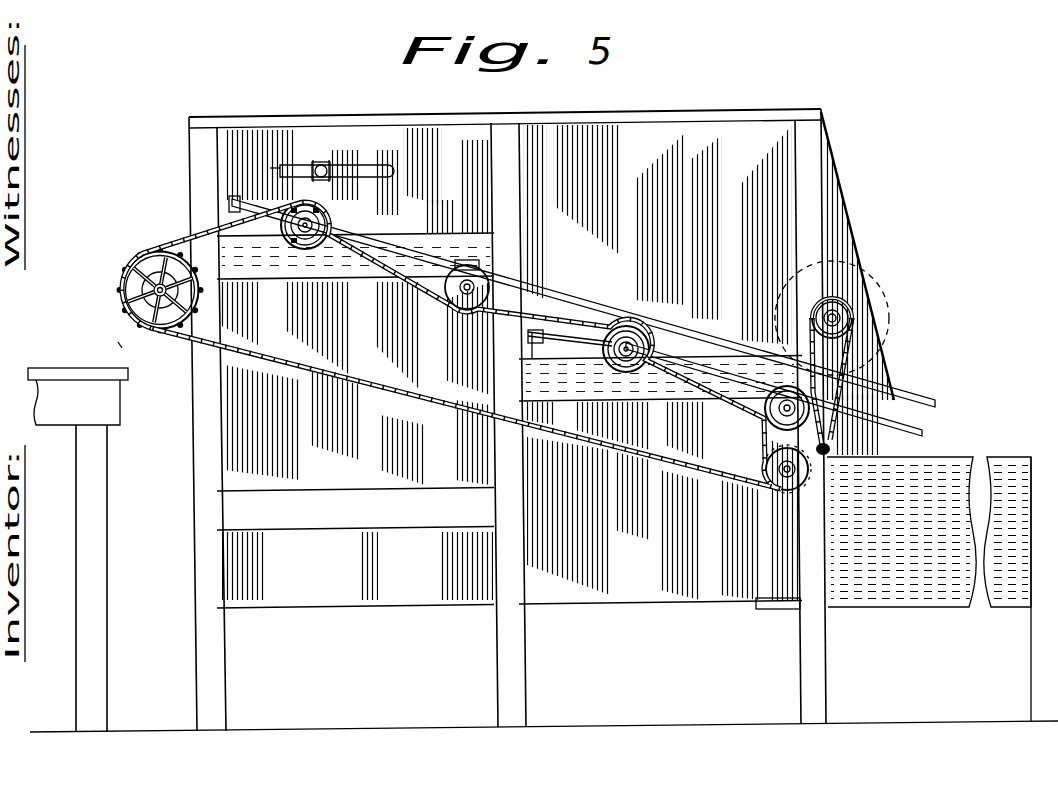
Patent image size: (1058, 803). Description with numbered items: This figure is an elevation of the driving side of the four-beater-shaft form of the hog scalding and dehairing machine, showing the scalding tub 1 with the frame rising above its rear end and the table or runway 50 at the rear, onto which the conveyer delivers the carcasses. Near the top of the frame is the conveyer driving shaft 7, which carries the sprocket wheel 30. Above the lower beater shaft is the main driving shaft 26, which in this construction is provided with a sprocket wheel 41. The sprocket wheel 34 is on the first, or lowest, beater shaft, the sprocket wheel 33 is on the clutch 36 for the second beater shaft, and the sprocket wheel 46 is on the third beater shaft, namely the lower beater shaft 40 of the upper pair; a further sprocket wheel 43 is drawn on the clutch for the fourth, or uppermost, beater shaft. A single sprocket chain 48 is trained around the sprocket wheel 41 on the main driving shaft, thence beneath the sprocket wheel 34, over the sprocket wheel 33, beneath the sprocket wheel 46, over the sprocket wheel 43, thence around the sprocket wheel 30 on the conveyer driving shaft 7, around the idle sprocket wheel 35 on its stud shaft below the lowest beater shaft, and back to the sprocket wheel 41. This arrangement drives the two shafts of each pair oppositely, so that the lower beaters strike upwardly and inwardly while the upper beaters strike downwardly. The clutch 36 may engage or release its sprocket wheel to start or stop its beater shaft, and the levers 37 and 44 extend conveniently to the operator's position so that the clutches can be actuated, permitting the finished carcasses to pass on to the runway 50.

The scalding tub 1 is at (953, 465).
The driving shaft 7 is at (118, 332).
The main driving shaft 26 is at (838, 318).
The sprocket wheel 30 is at (131, 265).
The sprocket wheel 33 is at (630, 327).
The sprocket wheel 34 is at (825, 455).
The idle sprocket wheel 35 is at (774, 479).
The clutch 36 is at (645, 340).
The lever 37 is at (921, 433).
The lower beater shaft 40 is at (472, 288).
The sprocket wheel 41 is at (855, 318).
The sprocket 43 is at (330, 217).
The lever 44 is at (953, 381).
The sprocket wheel 46 is at (471, 265).
The sprocket chain 48 is at (201, 348).
The table or runway 50 is at (80, 372).